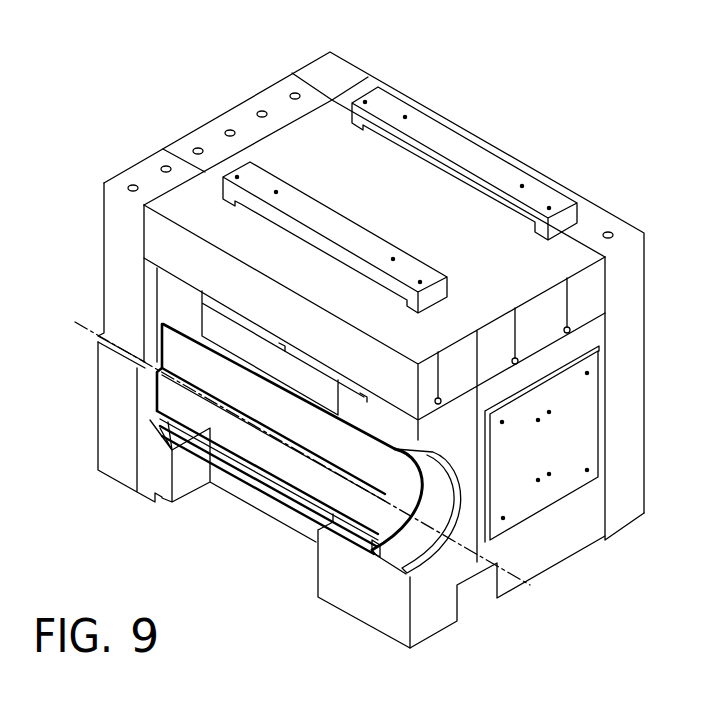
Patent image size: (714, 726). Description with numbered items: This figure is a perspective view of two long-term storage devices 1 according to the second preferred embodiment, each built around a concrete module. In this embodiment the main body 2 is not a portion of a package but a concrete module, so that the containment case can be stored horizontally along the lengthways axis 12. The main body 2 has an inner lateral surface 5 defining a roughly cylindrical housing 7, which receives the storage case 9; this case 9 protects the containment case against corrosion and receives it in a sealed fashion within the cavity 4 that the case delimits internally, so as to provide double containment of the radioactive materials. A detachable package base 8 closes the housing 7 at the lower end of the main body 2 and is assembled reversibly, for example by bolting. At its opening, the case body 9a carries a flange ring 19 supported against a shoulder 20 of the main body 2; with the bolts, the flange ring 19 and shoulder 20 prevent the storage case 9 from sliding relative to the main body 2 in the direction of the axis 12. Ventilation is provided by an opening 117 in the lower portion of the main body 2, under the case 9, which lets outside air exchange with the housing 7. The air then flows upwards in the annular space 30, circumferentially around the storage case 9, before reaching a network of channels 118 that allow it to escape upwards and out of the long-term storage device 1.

The long-term storage device 1 is at (127, 160).
The main body 2 is at (430, 602).
The cavity 4 is at (235, 392).
The inner lateral surface 5 is at (384, 440).
The housing 7 is at (263, 352).
The package base 8 is at (544, 488).
The storage case 9 is at (258, 444).
The case body 9a is at (221, 452).
The lengthways axis 12 is at (83, 330).
The flange ring 19 is at (405, 552).
The shoulder 20 is at (388, 540).
The annular space 30 is at (218, 320).
The opening 117 is at (274, 488).
The network of channels 118 is at (434, 399).